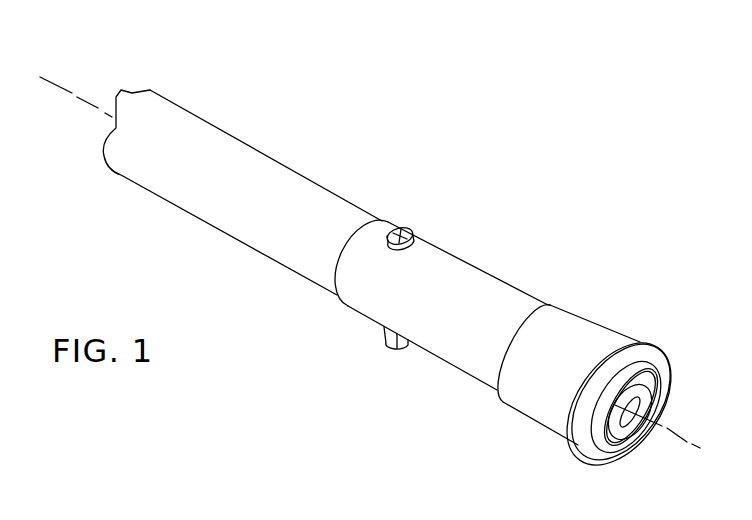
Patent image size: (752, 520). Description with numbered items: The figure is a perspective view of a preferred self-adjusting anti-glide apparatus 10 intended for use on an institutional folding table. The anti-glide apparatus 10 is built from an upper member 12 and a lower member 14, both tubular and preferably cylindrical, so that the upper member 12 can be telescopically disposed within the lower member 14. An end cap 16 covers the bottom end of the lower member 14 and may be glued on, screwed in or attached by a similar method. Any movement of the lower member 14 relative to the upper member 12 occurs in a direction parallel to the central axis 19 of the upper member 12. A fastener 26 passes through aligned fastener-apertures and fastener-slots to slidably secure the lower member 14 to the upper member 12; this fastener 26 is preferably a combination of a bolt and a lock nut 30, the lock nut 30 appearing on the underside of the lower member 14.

The anti-glide apparatus 10 is at (309, 125).
The upper member 12 is at (245, 213).
The lower member 14 is at (462, 280).
The end cap 16 is at (540, 402).
The central axis 19 is at (70, 93).
The fastener 26 is at (405, 228).
The lock nut 30 is at (383, 337).